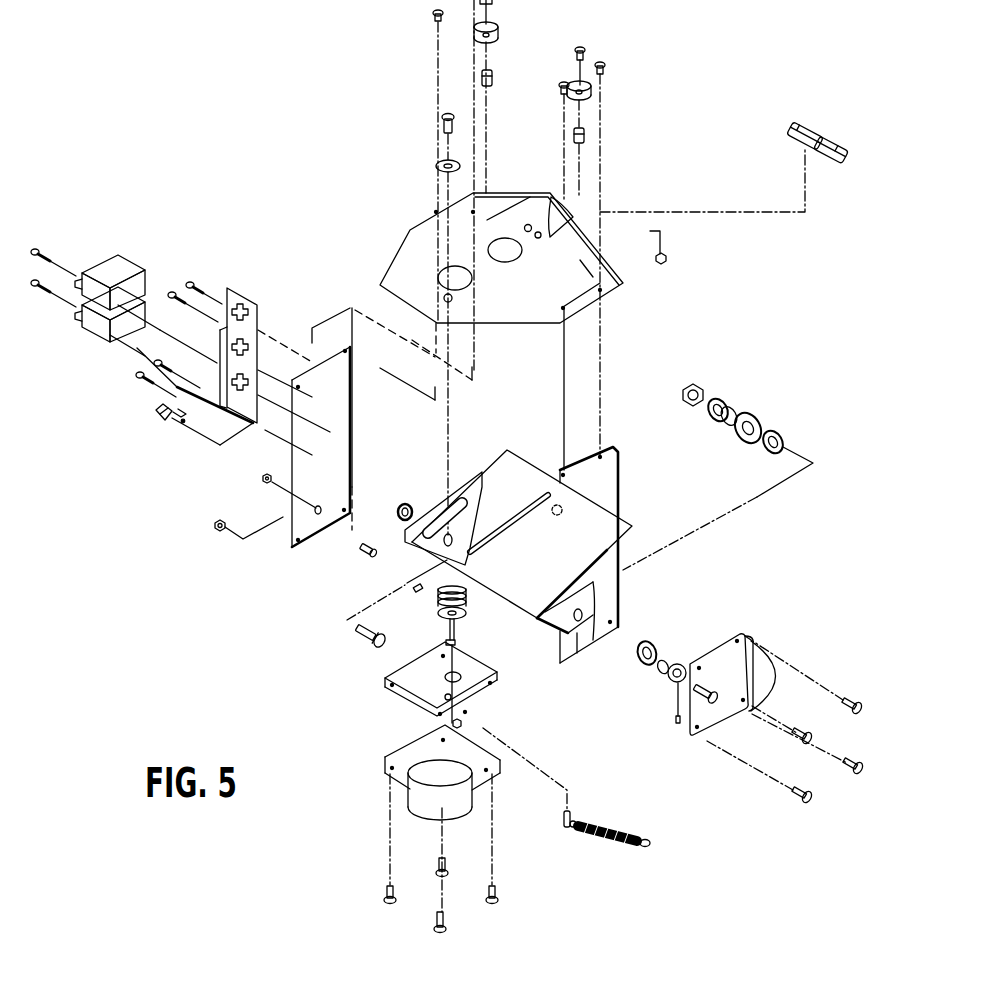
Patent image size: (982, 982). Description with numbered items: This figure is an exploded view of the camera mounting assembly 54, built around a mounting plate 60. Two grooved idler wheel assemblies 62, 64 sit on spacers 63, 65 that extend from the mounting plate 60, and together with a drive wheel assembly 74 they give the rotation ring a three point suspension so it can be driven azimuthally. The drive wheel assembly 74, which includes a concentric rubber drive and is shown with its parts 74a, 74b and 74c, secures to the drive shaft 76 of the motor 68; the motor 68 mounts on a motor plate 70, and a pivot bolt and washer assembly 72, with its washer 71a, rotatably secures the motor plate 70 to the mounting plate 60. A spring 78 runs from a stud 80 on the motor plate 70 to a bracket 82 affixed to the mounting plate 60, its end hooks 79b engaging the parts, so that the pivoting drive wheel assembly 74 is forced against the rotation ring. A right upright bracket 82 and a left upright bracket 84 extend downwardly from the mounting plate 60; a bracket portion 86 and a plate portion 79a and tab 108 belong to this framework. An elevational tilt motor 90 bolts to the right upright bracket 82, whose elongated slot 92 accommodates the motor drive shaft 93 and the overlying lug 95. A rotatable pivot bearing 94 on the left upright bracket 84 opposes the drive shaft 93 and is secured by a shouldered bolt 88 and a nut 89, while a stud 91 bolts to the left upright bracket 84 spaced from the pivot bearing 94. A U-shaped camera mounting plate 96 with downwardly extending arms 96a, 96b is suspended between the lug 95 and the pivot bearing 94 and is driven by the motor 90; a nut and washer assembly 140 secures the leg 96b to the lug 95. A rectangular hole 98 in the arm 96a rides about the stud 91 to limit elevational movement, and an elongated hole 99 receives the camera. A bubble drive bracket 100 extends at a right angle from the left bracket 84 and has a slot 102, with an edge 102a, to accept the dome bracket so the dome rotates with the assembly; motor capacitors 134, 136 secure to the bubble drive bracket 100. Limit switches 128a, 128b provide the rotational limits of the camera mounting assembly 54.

The camera mounting assembly 54 is at (712, 112).
The mounting plate 60 is at (393, 258).
The grooved idler wheel assembly 62 is at (592, 92).
The spacer 63 is at (585, 136).
The grooved idler wheel assembly 64 is at (497, 30).
The spacer 65 is at (493, 84).
The motor 68 is at (434, 818).
The motor plate 70 is at (409, 704).
The washer 71a is at (424, 172).
The pivot bolt and washer assembly 72 is at (428, 325).
The drive wheel assembly 74 is at (441, 607).
The flange 74a is at (470, 604).
The coupling 74b is at (464, 590).
The pin 74c is at (417, 592).
The drive shaft 76 is at (468, 725).
The spring 78 is at (624, 848).
The plate 79a is at (561, 546).
The spring hook 79b is at (655, 830).
The stud 80 is at (563, 821).
The right upright bracket 82 is at (620, 617).
The left upright bracket 84 is at (291, 528).
The bracket 86 is at (392, 419).
The shouldered bolt 88 is at (372, 649).
The nut 89 is at (214, 526).
The elevational tilt motor 90 is at (767, 668).
The stud 91 is at (358, 552).
The elongated slot 92 is at (593, 653).
The drive shaft 93 is at (700, 689).
The rotatable pivot bearing 94 is at (405, 503).
The lug 95 is at (680, 662).
The U-shaped camera mounting plate 96 is at (517, 462).
The downwardly extending arm 96a is at (407, 571).
The downwardly extending arm 96b is at (598, 592).
The rectangular hole 98 is at (447, 507).
The elongated hole 99 is at (546, 498).
The bubble drive bracket 100 is at (207, 444).
The slot 102 is at (157, 416).
The connector pin 102a is at (183, 423).
The tab 108 is at (556, 230).
The limit switch 128a is at (797, 146).
The limit switch 128b is at (824, 164).
The motor capacitor 134 is at (134, 266).
The motor capacitor 136 is at (148, 294).
The nut and washer assembly 140 is at (758, 396).